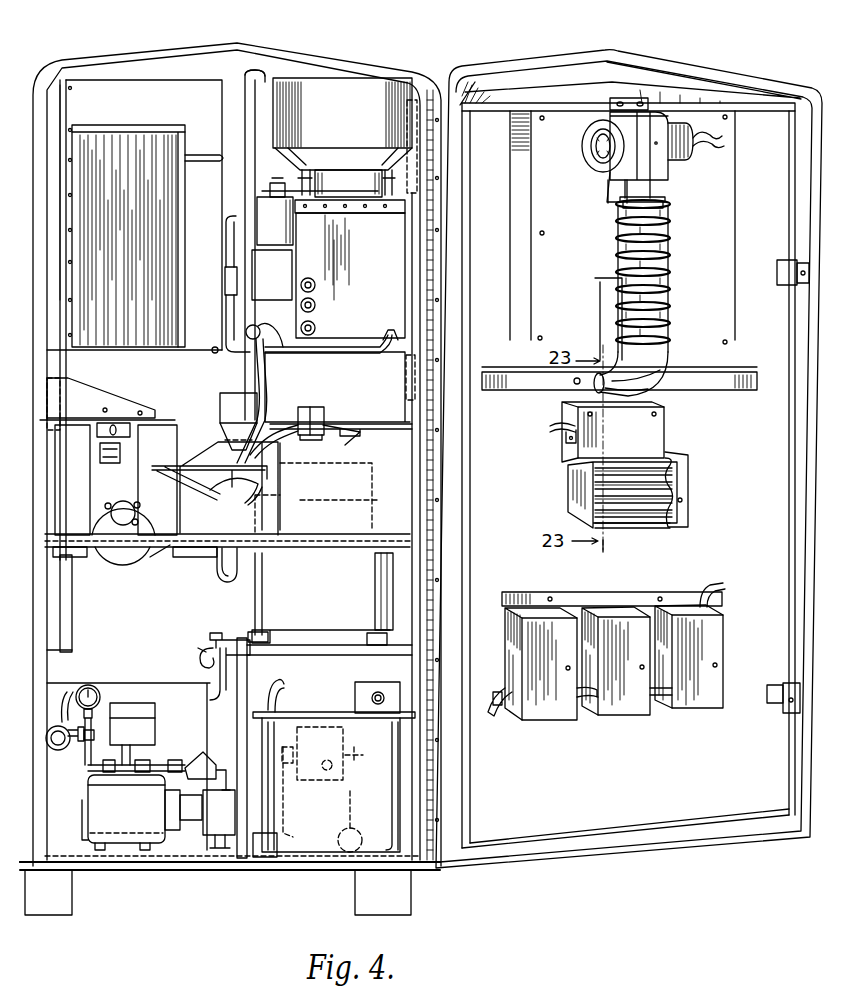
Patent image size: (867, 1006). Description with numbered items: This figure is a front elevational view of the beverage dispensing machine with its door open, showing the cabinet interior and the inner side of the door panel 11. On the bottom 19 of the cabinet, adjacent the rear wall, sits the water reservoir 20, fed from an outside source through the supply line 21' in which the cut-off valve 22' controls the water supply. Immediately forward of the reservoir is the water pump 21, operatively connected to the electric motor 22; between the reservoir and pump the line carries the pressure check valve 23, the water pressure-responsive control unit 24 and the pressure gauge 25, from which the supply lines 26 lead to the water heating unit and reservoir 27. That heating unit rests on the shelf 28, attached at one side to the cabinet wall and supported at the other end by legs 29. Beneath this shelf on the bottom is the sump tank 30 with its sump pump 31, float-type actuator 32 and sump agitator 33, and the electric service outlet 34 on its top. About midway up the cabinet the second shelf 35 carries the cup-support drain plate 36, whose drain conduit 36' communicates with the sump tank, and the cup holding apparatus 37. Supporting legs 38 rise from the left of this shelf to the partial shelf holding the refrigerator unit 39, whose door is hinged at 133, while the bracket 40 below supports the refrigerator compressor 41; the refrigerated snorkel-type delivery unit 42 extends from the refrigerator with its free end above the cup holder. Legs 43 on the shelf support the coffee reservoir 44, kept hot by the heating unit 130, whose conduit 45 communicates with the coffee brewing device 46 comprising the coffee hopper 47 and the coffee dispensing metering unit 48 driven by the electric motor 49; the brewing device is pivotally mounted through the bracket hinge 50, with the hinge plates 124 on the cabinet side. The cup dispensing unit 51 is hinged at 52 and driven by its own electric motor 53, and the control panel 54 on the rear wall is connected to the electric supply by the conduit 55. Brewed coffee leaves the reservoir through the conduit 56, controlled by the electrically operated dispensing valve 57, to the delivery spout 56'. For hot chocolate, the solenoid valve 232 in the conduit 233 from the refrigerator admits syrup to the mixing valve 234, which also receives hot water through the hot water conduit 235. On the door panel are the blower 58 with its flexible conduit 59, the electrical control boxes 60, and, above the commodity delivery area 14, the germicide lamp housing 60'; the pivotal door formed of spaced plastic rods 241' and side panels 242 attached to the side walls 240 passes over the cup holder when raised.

The hinge 133 is at (72, 100).
The refrigerator unit 39 is at (141, 115).
The cup dispensing unit 51 is at (111, 333).
The conduit 55 is at (247, 141).
The coffee hopper 47 is at (338, 137).
The coffee dispensing metering unit 48 is at (339, 191).
The bracket hinge 50 is at (412, 207).
The hinge plates 124 is at (414, 176).
The electric motor 49 is at (261, 229).
The control panel 54 is at (263, 285).
The coffee brewing device 46 is at (371, 279).
The conduit 233 is at (228, 252).
The solenoid valve 232 is at (226, 285).
The mixing valve 234 is at (256, 326).
The hot water conduit 235 is at (292, 352).
The conduit 45 is at (386, 352).
The coffee reservoir 44 is at (341, 393).
The dispensing valve 57 is at (318, 410).
The heating unit 130 is at (363, 427).
The conduit 56 is at (289, 441).
The delivery spout 56' is at (347, 445).
The refrigerated snorkel-type delivery unit 42 is at (232, 410).
The hinge 52 is at (64, 396).
The electric motor 53 is at (107, 433).
The supporting legs 38 is at (63, 500).
The refrigerator compressor 41 is at (106, 495).
The cup holding apparatus 37 is at (198, 493).
The water heating unit and reservoir 27 is at (321, 485).
The legs 43 is at (372, 507).
The bracket 40 is at (190, 557).
The cup-support drain plate 36 is at (181, 630).
The drain conduit 36' is at (216, 577).
The second shelf 35 is at (318, 555).
The cut-off valve 22' is at (230, 651).
The supply line 21' is at (191, 655).
The water reservoir 20 is at (176, 722).
The supply lines 26 is at (58, 690).
The pressure gauge 25 is at (99, 690).
The water pressure-responsive control unit 24 is at (121, 737).
The pressure check valve 23 is at (203, 764).
The electric motor 22 is at (123, 812).
The water pump 21 is at (200, 818).
The legs 29 is at (245, 680).
The shelf 28 is at (324, 660).
The electric service outlet 34 is at (378, 689).
The sump tank 30 is at (357, 811).
The sump pump 31 is at (322, 767).
The sump agitator 33 is at (297, 792).
The float-type actuator 32 is at (340, 821).
The bottom 19 is at (224, 872).
The door panel 11 is at (689, 806).
The blower 58 is at (680, 152).
The flexible conduit 59 is at (662, 298).
The germicide lamp housing 60' is at (633, 432).
The side walls 240 is at (684, 488).
The plastic rods 241' is at (675, 481).
The side panels 242 is at (672, 511).
The commodity delivery area 14 is at (622, 522).
The electrical control boxes 60 is at (606, 668).